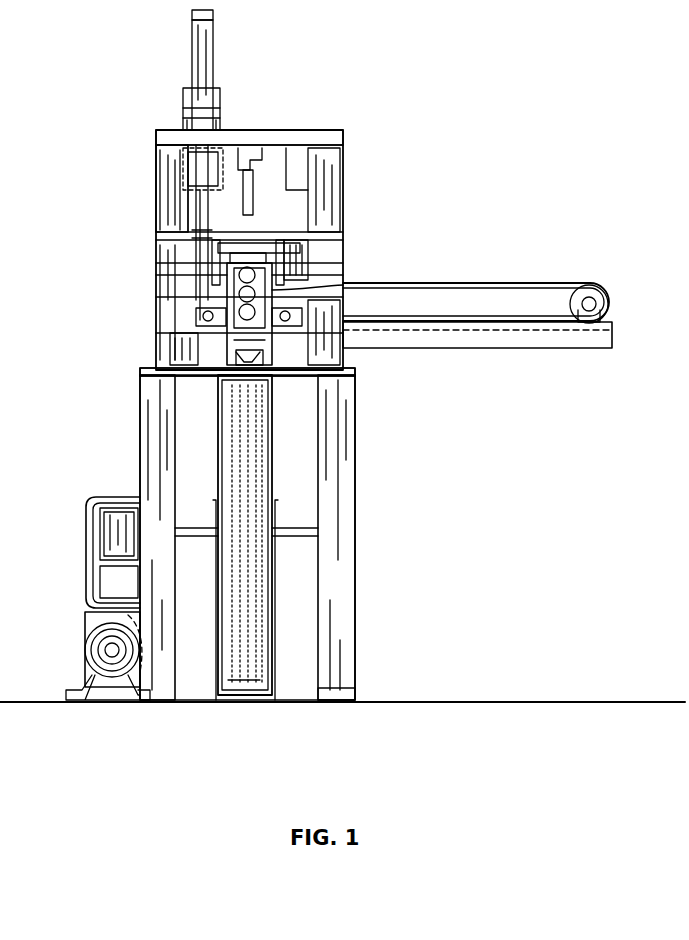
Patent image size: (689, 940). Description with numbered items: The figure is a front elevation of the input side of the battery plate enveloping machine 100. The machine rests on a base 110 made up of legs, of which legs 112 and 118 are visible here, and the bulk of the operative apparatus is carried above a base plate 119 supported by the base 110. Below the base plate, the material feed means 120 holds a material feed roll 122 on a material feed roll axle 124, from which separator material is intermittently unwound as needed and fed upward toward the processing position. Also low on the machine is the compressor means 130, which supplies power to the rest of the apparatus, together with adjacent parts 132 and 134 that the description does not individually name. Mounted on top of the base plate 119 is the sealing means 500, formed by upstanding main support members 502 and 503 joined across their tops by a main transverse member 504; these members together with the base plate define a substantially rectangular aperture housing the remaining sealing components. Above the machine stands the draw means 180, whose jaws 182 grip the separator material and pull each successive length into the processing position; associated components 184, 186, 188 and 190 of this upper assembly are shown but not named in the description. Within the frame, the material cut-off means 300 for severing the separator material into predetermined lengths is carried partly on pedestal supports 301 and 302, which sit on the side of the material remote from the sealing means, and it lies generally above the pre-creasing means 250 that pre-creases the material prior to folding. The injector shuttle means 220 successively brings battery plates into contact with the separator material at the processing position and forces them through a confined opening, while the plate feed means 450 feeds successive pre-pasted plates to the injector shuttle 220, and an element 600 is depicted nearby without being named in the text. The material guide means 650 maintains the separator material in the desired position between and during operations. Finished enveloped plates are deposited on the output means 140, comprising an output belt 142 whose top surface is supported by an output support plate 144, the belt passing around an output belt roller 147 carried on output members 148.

The battery plate enveloping machine 100 is at (432, 222).
The base 110 is at (357, 608).
The leg 112 is at (342, 670).
The leg 118 is at (152, 468).
The base plate 119 is at (355, 378).
The material feed means 120 is at (280, 684).
The material feed roll 122 is at (248, 626).
The material feed roll axle 124 is at (283, 532).
The compressor means 130 is at (88, 650).
The motor base 132 is at (98, 680).
The control unit 134 is at (110, 540).
The output means 140 is at (564, 283).
The output belt 142 is at (424, 283).
The output support plate 144 is at (445, 295).
The output belt roller 147 is at (610, 306).
The output members 148 is at (490, 340).
The draw means 180 is at (215, 83).
The jaws 182 is at (264, 168).
The piston block 184 is at (195, 188).
The piston rod 186 is at (198, 47).
The rod 188 is at (200, 210).
The guide rod 190 is at (165, 228).
The injector shuttle means 220 is at (343, 266).
The pre-creasing means 250 is at (240, 378).
The material cut-off means 300 is at (262, 350).
The pedestal support 301 is at (343, 286).
The pedestal support 302 is at (195, 318).
The plate feed means 450 is at (338, 243).
The sealing means 500 is at (350, 178).
The main support member 502 is at (343, 160).
The main support member 503 is at (158, 155).
The main transverse member 504 is at (330, 136).
The feed bar 600 is at (242, 246).
The material guide means 650 is at (218, 340).